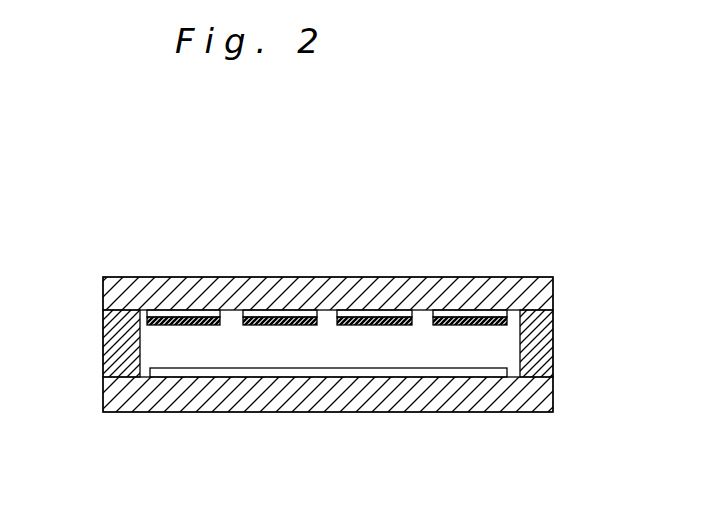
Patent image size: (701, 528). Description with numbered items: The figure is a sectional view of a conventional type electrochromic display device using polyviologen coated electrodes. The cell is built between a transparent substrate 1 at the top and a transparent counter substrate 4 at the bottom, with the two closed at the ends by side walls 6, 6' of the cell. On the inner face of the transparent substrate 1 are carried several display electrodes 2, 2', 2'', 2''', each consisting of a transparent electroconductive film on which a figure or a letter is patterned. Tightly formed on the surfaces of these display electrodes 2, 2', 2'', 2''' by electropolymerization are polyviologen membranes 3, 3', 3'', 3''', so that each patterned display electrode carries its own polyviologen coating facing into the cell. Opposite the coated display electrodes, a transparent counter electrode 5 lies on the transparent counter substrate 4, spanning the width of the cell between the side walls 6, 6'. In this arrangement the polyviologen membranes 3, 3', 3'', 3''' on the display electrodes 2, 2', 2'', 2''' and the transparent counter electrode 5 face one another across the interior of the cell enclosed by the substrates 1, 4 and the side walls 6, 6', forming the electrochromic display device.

The transparent substrate 1 is at (548, 300).
The display electrode 2 is at (356, 259).
The display electrode 2' is at (416, 244).
The display electrode 2'' is at (306, 244).
The display electrode 2''' is at (192, 244).
The polyviologen membrane 3 is at (495, 248).
The polyviologen membrane 3' is at (384, 248).
The polyviologen membrane 3'' is at (280, 248).
The polyviologen membrane 3''' is at (166, 248).
The transparent counter substrate 4 is at (503, 402).
The transparent counter electrode 5 is at (372, 372).
The side wall 6 is at (580, 343).
The side wall 6' is at (85, 343).